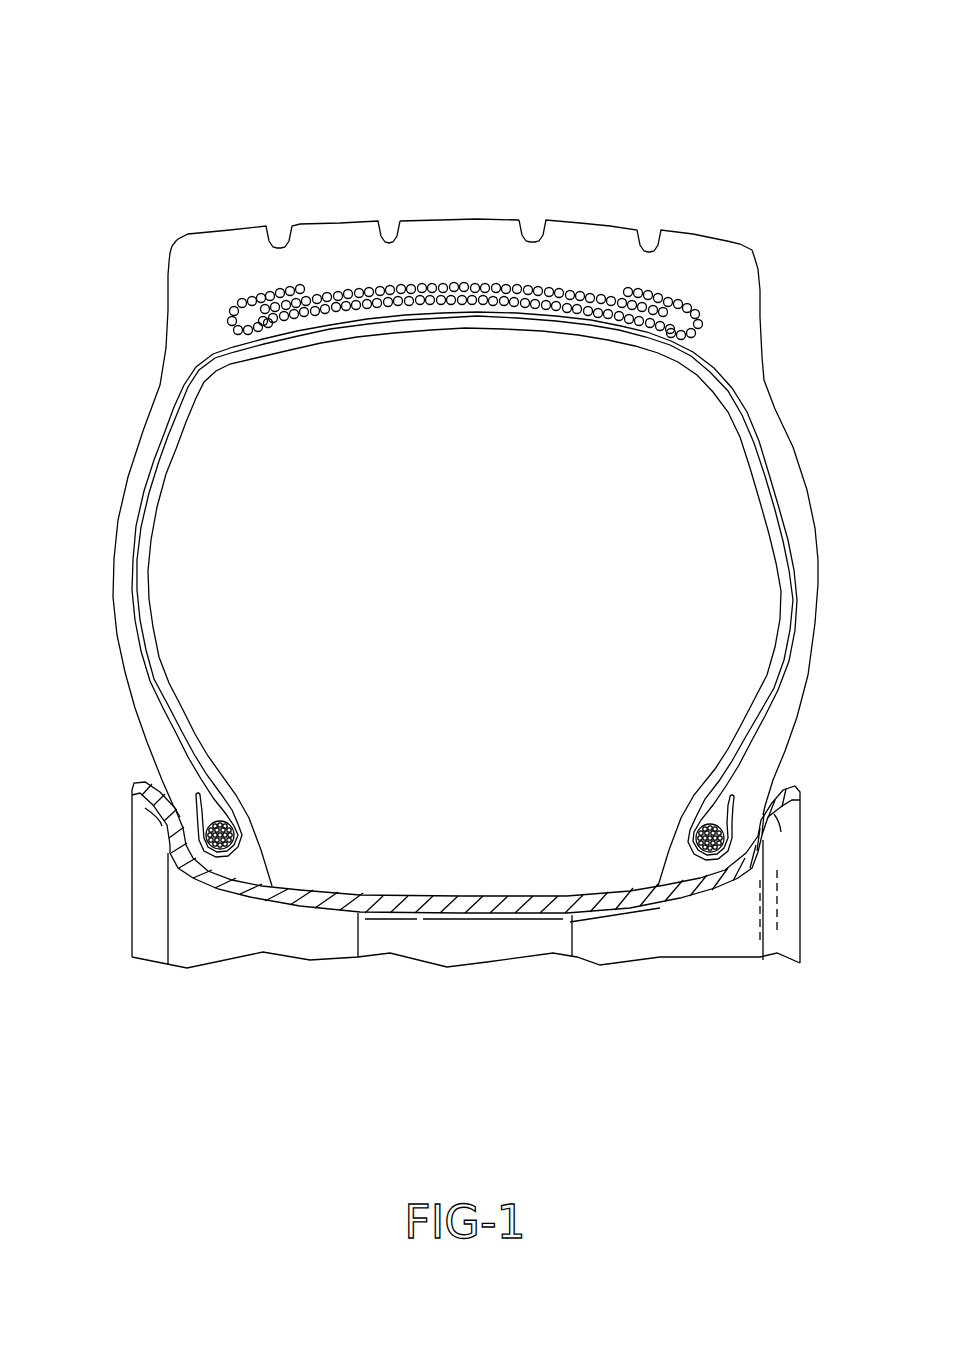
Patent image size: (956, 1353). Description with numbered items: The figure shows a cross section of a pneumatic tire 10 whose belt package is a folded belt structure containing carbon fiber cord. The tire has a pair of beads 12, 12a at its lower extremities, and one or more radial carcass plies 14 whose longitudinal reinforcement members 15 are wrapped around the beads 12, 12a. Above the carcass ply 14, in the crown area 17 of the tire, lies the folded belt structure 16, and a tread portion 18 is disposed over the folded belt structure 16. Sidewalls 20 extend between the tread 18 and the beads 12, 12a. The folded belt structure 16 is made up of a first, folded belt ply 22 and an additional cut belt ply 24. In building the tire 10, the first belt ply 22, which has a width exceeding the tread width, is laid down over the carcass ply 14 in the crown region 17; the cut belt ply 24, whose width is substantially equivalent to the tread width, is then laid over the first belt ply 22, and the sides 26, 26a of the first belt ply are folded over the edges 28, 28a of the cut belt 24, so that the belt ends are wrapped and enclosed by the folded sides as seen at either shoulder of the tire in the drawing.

The pneumatic tire 10 is at (222, 993).
The bead 12 is at (222, 832).
The bead 12a is at (703, 837).
The radial carcass ply 14 is at (155, 437).
The longitudinal reinforcement members 15 is at (182, 737).
The folded belt structure 16 is at (478, 306).
The crown area 17 is at (477, 146).
The tread portion 18 is at (463, 217).
The sidewalls 20 is at (803, 473).
The first belt ply 22 is at (566, 308).
The cut belt ply 24 is at (365, 290).
The side of first belt ply 26 is at (660, 292).
The side of first belt ply 26a is at (270, 294).
The edge of cut belt 28 is at (267, 308).
The edge of cut belt 28a is at (667, 313).